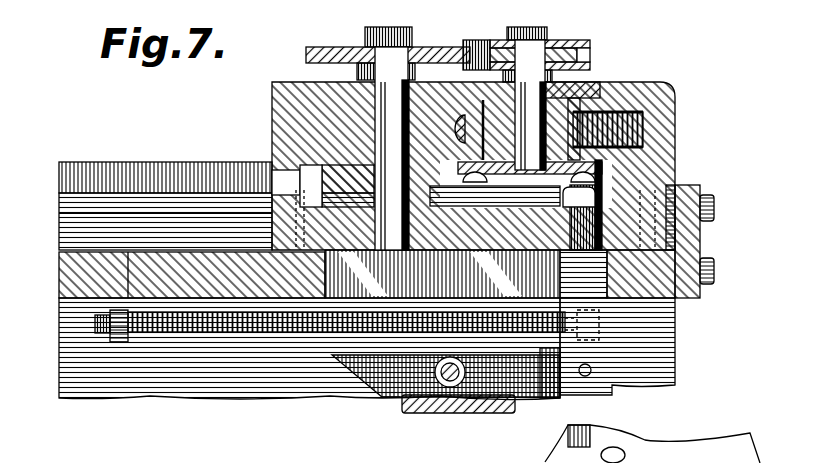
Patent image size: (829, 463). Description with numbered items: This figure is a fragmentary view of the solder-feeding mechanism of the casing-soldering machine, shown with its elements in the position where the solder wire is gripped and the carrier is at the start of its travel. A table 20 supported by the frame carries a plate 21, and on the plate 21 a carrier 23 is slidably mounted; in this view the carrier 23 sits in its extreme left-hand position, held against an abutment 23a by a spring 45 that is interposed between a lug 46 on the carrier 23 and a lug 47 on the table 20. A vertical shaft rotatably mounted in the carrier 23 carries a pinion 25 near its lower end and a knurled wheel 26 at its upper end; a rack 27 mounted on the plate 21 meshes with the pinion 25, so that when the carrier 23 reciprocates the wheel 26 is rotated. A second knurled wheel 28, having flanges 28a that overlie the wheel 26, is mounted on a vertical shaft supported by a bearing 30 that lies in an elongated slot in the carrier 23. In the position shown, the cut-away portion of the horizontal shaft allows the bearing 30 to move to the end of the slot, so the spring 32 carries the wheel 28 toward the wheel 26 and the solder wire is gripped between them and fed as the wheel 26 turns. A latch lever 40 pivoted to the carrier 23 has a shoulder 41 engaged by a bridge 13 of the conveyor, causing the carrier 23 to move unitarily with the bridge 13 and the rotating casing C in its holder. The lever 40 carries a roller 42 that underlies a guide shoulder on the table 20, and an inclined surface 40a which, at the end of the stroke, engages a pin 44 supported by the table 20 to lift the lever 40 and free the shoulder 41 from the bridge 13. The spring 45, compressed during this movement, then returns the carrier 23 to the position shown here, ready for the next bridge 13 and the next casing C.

The bridge 13 is at (455, 405).
The table 20 is at (72, 362).
The plate 21 is at (78, 277).
The carrier 23 is at (278, 222).
The abutment 23a is at (690, 243).
The pinion 25 is at (512, 191).
The knurled wheel 26 is at (332, 52).
The rack 27 is at (146, 178).
The second knurled wheel 28 is at (575, 40).
The flanges 28a is at (586, 52).
The bearing 30 is at (553, 120).
The spring 32 is at (645, 125).
The latch lever 40 is at (548, 386).
The inclined surface 40a is at (356, 372).
The shoulder 41 is at (396, 396).
The roller 42 is at (466, 369).
The pin 44 is at (590, 375).
The spring 45 is at (268, 333).
The lug 46 is at (610, 330).
The lug 47 is at (118, 342).
The casing C is at (708, 458).